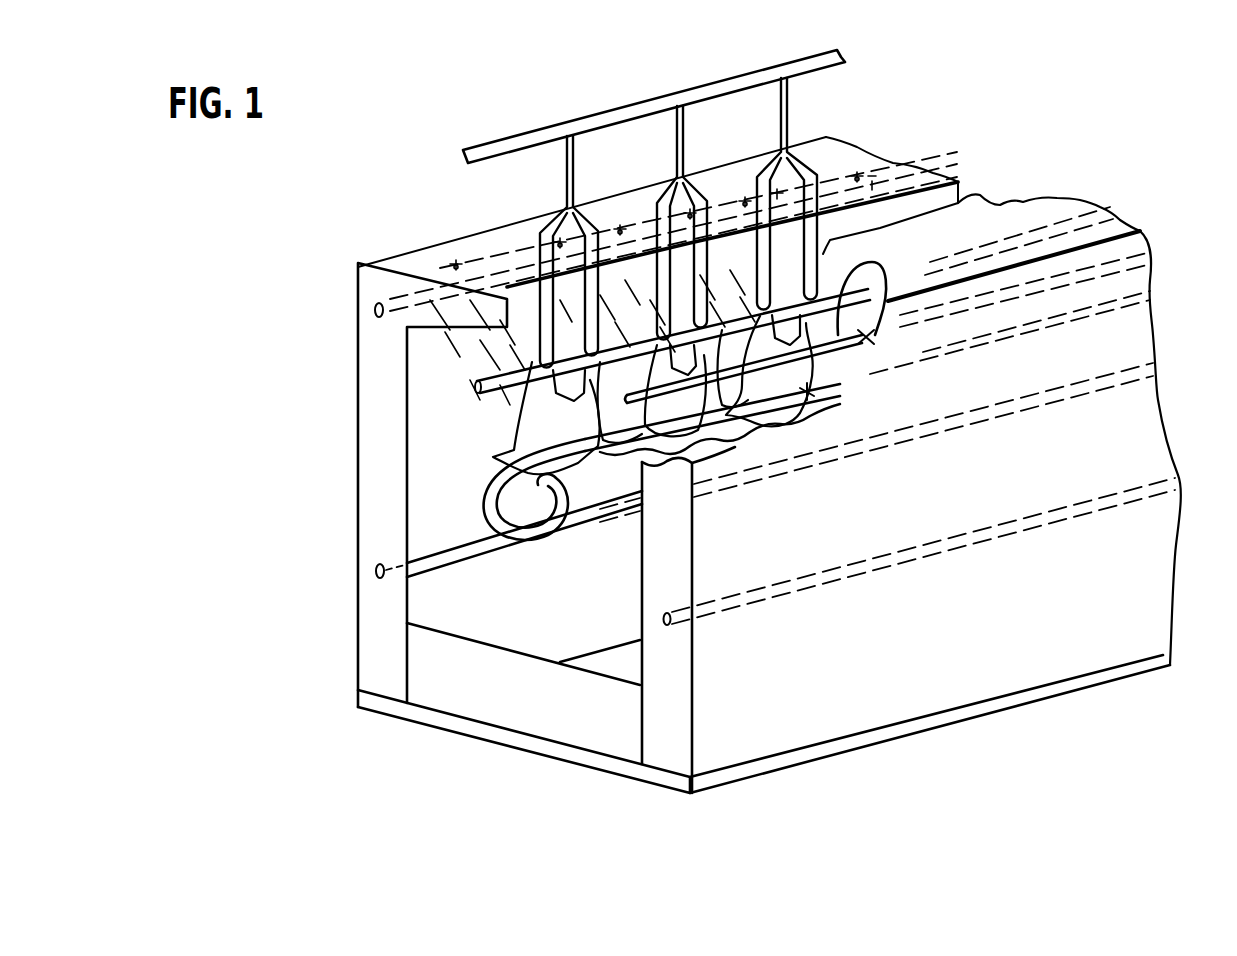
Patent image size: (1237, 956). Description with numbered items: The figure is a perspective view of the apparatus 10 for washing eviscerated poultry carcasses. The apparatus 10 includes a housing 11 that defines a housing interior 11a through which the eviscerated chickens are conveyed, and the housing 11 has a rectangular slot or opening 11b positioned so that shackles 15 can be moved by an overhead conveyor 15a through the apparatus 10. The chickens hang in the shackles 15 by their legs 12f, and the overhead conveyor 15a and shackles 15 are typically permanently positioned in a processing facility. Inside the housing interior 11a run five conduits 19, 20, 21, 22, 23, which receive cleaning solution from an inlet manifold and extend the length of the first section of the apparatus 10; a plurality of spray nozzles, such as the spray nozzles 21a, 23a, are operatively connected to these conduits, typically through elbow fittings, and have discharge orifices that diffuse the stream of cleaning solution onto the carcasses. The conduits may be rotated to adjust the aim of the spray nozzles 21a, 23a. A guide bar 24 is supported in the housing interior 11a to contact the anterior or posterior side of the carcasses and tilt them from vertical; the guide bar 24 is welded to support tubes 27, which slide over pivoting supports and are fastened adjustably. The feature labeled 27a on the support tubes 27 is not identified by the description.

The apparatus for washing eviscerated poultry carcasses 10 is at (1102, 176).
The housing 11 is at (1186, 593).
The housing interior 11a is at (418, 425).
The rectangular slot or opening 11b is at (940, 196).
The legs 12f is at (543, 380).
The shackles 15 is at (787, 107).
The overhead conveyor 15a is at (628, 115).
The conduit 19 is at (385, 305).
The conduit 20 is at (453, 560).
The conduit 21 is at (866, 338).
The spray nozzle 21a is at (858, 272).
The conduit 22 is at (788, 590).
The conduit 23 is at (492, 300).
The spray nozzle 23a is at (612, 275).
The guide bar 24 is at (594, 466).
The support tubes 27 is at (722, 442).
The electrode fitting 27a is at (807, 393).